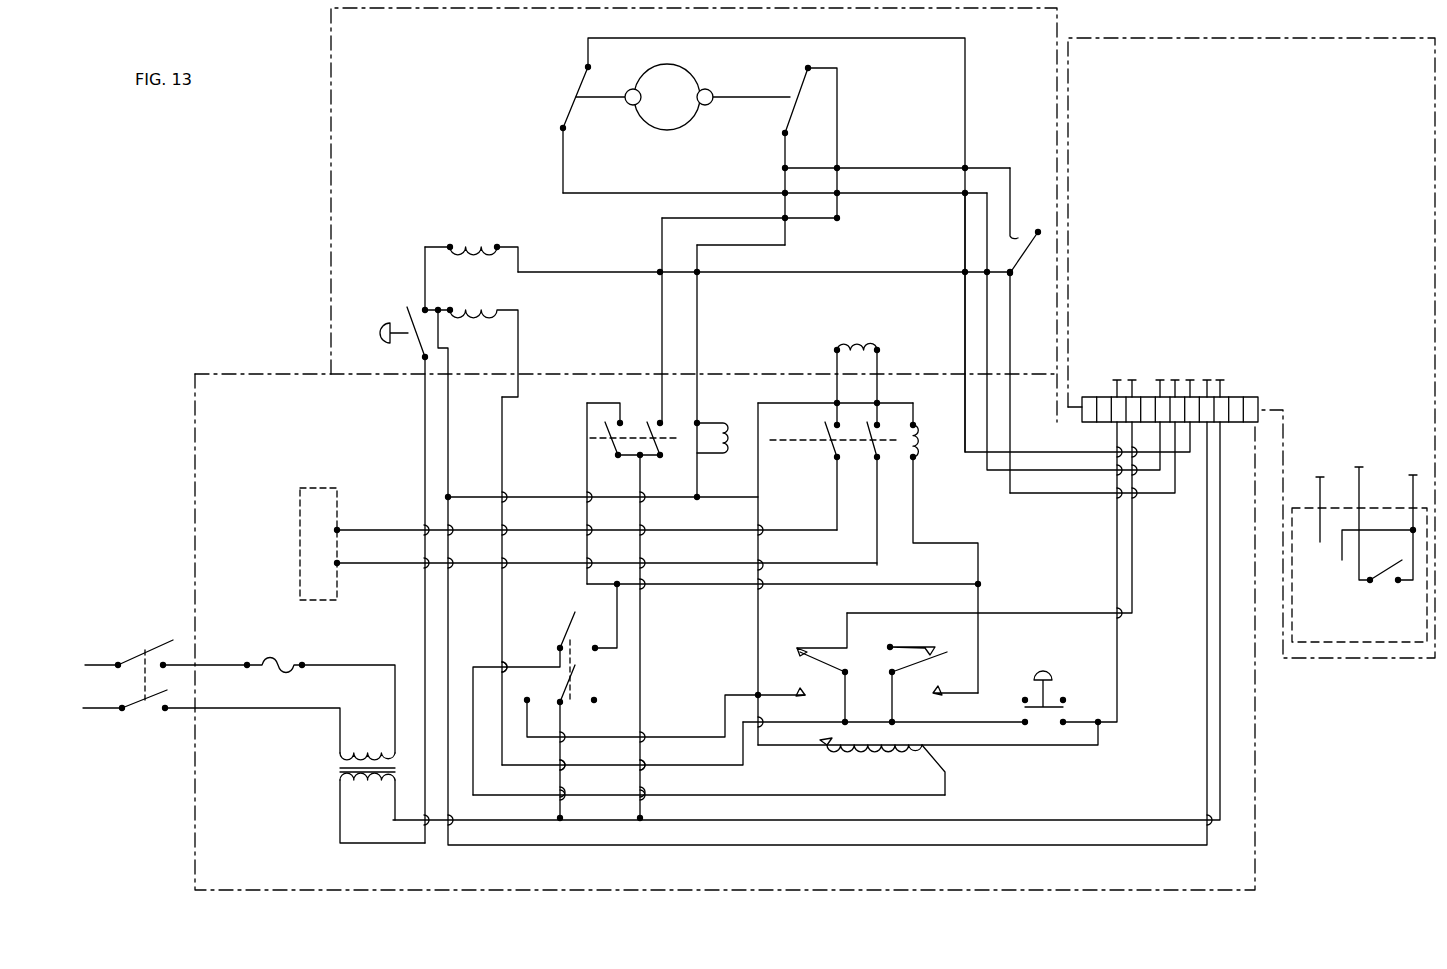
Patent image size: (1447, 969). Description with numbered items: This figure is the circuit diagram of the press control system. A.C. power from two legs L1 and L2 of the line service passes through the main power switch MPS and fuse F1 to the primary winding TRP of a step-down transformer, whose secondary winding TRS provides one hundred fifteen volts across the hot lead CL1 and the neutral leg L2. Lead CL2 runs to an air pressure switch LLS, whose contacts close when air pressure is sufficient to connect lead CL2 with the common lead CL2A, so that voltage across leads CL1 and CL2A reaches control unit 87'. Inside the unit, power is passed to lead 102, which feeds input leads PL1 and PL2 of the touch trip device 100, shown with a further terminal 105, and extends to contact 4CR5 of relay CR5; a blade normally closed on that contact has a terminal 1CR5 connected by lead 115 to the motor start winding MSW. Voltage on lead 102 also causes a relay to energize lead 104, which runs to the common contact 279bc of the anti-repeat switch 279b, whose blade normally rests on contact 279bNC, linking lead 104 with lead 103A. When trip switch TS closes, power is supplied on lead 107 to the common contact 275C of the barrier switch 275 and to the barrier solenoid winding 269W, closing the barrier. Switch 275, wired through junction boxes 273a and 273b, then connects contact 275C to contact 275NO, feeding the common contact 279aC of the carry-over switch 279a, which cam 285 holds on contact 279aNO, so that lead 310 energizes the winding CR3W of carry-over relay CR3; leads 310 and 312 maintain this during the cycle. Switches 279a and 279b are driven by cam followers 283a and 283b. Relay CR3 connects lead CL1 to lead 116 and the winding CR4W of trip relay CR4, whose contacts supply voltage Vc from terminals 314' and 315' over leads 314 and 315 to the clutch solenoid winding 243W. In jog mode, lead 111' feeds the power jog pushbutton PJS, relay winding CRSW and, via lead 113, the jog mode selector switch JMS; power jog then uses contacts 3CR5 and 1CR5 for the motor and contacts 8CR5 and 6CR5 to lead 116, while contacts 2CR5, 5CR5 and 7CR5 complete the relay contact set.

The junction box 273a is at (1040, 890).
The junction box 273b is at (626, 215).
The control unit 87' is at (1251, 332).
The lead 103A is at (790, 38).
The contact of anti-repeat switch 279bNC is at (598, 65).
The anti-repeat limit switch 279b is at (562, 100).
The common contact of anti-repeat switch 279bc is at (560, 132).
The cam 285 is at (664, 130).
The cam follower 283b is at (630, 108).
The cam follower 283a is at (708, 88).
The normally-open contact of carry-over switch 279aNO is at (815, 66).
The carry-over limit switch 279a is at (845, 138).
The common contact of carry-over switch 279aC is at (783, 168).
The lead 104 is at (660, 190).
The lead 312 is at (716, 222).
The lead 310 is at (752, 250).
The normally-open contact of barrier switch 275NO is at (1012, 232).
The barrier position detecting limit switch 275 is at (1040, 255).
The common contact of barrier switch 275C is at (1015, 278).
The lead 107 is at (1010, 352).
The barrier control solenoid winding 269W is at (456, 268).
The motor start winding MSW is at (470, 318).
The air pressure switch LLS is at (408, 303).
The lead CL2 is at (422, 388).
The common power lead CL2A is at (428, 272).
The lead 116 is at (585, 418).
The carry-over relay CR3 is at (640, 408).
The carry-over relay winding CR3W is at (712, 412).
The press clutch solenoid valve winding 243W is at (845, 330).
The trip relay CR4 is at (825, 458).
The trip relay winding CR4W is at (945, 420).
The lead 314 is at (803, 493).
The lead 315 is at (831, 511).
The voltage Vc is at (317, 544).
The terminal 314' is at (586, 517).
The terminal 315' is at (606, 581).
The jog mode selector switch JMS is at (600, 672).
The relay CR5 is at (868, 632).
The relay contact 4CR5 is at (830, 640).
The relay contact 5CR5 is at (882, 642).
The relay contact 3CR5 is at (820, 682).
The relay contact 6CR5 is at (918, 680).
The relay terminal 1CR5 is at (862, 728).
The relay contact 8CR5 is at (895, 728).
The power jog pushbutton switch PJS is at (1068, 700).
The lead 111' is at (1094, 674).
The relay winding CRSW is at (850, 768).
The relay contact 2CR5 is at (825, 750).
The relay contact 7CR5 is at (930, 748).
The lead 113 is at (792, 795).
The lead 115 is at (706, 766).
The lead 102 is at (1125, 567).
The lead CL1 is at (1220, 708).
The power line leg L2 is at (102, 662).
The power line leg L1 is at (110, 712).
The main power switch MPS is at (148, 715).
The fuse F1 is at (280, 660).
The transformer primary winding TRP is at (384, 748).
The transformer secondary winding TRS is at (385, 788).
The touch trip device 100 is at (1372, 648).
The input power lead PL1 is at (1320, 542).
The wire 105 is at (1362, 475).
The input power lead PL2 is at (1343, 562).
The trip switch TS is at (1382, 585).